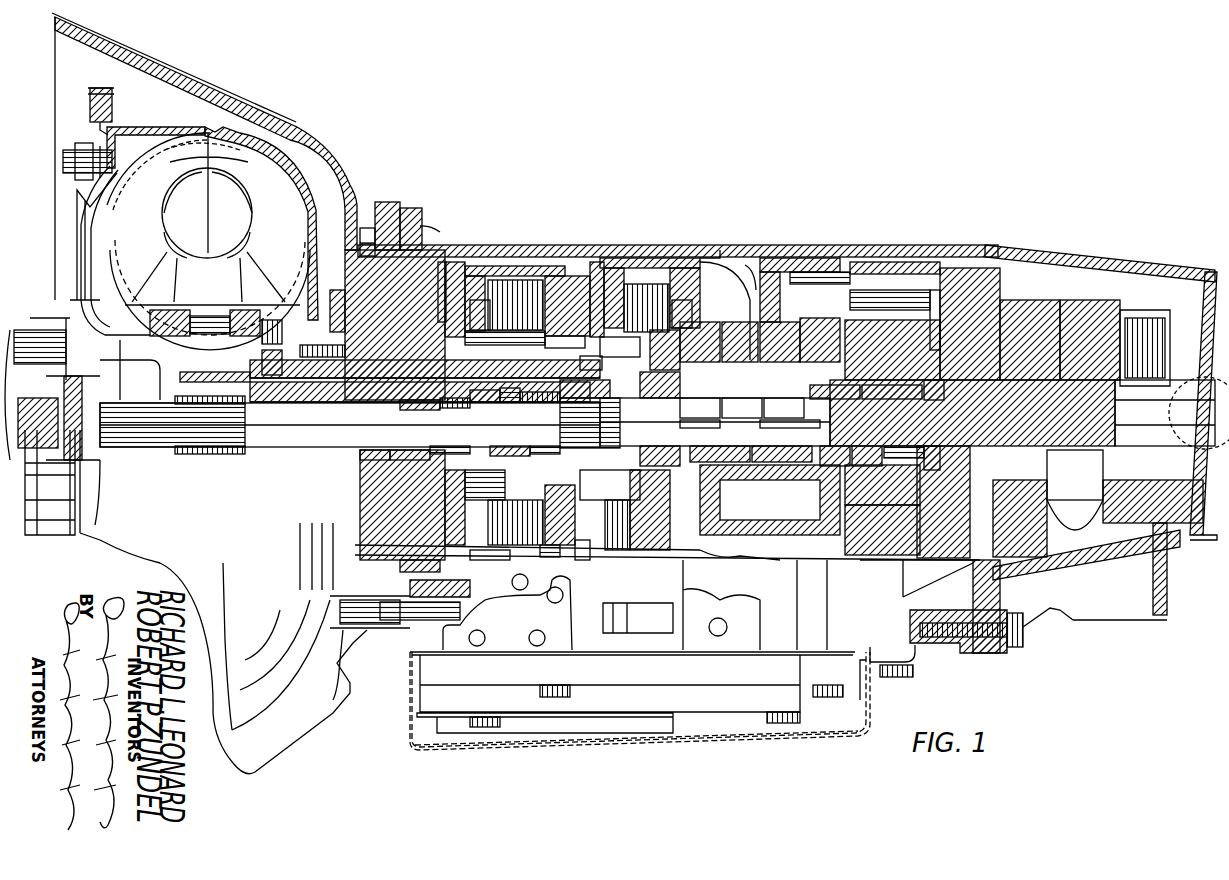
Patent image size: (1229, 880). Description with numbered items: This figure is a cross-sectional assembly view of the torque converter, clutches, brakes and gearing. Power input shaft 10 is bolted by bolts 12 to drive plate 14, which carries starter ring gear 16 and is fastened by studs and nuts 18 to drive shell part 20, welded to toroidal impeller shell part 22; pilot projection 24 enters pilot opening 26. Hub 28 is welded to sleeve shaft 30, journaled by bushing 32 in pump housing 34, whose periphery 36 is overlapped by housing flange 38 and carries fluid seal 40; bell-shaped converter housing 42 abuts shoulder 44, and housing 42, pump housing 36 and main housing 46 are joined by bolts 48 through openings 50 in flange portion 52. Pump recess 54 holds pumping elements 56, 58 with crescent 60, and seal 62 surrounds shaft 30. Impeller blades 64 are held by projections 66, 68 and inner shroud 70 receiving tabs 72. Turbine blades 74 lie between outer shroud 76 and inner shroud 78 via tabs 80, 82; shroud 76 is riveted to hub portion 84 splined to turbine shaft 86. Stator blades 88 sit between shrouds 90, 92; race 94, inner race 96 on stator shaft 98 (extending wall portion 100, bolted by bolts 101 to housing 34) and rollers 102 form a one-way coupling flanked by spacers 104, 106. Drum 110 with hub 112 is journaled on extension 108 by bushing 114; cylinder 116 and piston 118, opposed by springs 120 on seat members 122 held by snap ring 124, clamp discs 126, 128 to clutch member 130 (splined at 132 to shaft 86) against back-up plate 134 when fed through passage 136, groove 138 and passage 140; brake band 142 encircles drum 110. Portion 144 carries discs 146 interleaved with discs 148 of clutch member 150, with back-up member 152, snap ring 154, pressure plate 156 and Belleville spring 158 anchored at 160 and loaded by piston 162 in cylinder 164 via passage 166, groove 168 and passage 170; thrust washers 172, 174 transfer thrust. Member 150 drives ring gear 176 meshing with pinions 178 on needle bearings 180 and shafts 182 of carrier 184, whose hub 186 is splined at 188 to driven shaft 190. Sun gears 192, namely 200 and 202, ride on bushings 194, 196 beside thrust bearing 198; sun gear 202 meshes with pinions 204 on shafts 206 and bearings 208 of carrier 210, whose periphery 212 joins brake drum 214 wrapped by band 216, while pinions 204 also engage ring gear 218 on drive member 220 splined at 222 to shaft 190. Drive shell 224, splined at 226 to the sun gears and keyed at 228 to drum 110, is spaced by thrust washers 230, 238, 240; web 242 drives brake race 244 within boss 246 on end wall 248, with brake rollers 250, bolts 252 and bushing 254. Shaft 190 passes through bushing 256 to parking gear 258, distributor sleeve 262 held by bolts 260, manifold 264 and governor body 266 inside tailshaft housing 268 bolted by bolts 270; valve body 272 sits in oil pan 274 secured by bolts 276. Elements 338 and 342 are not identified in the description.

The power input shaft 10 is at (28, 334).
The bolts 12 is at (56, 328).
The drive plate 14 is at (78, 186).
The starter ring gear 16 is at (91, 99).
The studs and cooperating nuts 18 is at (86, 150).
The torque converter drive shell part 20 is at (130, 127).
The impeller shell part 22 is at (192, 127).
The pilot projection 24 is at (80, 420).
The pilot opening 26 is at (40, 420).
The hub 28 is at (264, 362).
The sleeve shaft 30 is at (312, 400).
The bushing 32 is at (335, 400).
The pump housing 34 is at (345, 324).
The pump housing periphery 36 is at (368, 238).
The housing flange 38 is at (383, 206).
The fluid seal 40 is at (410, 208).
The torque converter housing 42 is at (298, 130).
The shoulder 44 is at (368, 252).
The main housing 46 is at (468, 262).
The bolts 48 is at (342, 622).
The registering openings 50 is at (438, 621).
The peripheral flange portion 52 is at (436, 230).
The pump recess 54 is at (378, 458).
The pumping element 56 is at (402, 458).
The pumping element 58 is at (400, 512).
The crescent 60 is at (348, 298).
The fluid seal 62 is at (318, 352).
The impeller blades 64 is at (262, 219).
The projections 66 is at (246, 182).
The innermost projections 68 is at (305, 262).
The inner shroud 70 is at (245, 194).
The tabs 72 is at (240, 194).
The turbine blades 74 is at (146, 208).
The outer shroud 76 is at (140, 160).
The inner shroud 78 is at (170, 213).
The tabs 80 is at (178, 148).
The tabs 82 is at (170, 195).
The hub portion 84 is at (176, 386).
The turbine shaft 86 is at (204, 422).
The stator blades 88 is at (232, 298).
The first shroud 90 is at (205, 258).
The second shroud 92 is at (250, 322).
The coupling race 94 is at (212, 316).
The inner coupling race 96 is at (160, 406).
The stator shaft 98 is at (250, 402).
The wall portion 100 is at (449, 292).
The bolts 101 is at (428, 568).
The rollers 102 is at (216, 400).
The thrust member 104 is at (190, 320).
The thrust member 106 is at (266, 328).
The extension 108 is at (550, 446).
The drum 110 is at (530, 280).
The hub 112 is at (452, 406).
The bushing 114 is at (536, 402).
The annular cylinder 116 is at (474, 300).
The annular piston 118 is at (478, 290).
The clutch springs 120 is at (508, 336).
The spring seat members 122 is at (506, 506).
The snap ring 124 is at (500, 492).
The clutch discs 126 is at (514, 590).
The clutch discs 128 is at (488, 568).
The clutch member 130 is at (552, 338).
The splined connection 132 is at (608, 388).
The back-up plate 134 is at (560, 276).
The radial passage 136 is at (480, 402).
The annular groove 138 is at (462, 446).
The pressure distributor passage 140 is at (512, 446).
The friction brake band 142 is at (502, 266).
The rearwardly extending portion 144 is at (668, 272).
The clutch discs 146 is at (652, 555).
The clutch discs 148 is at (618, 555).
The clutch member 150 is at (660, 338).
The clutch pressure back-up member 152 is at (684, 296).
The snap ring 154 is at (688, 290).
The pressure plate 156 is at (640, 290).
The Belleville actuator spring 158 is at (596, 262).
The anchor 160 is at (612, 284).
The annular piston 162 is at (582, 556).
The annular cylinder 164 is at (548, 552).
The passage 166 is at (574, 360).
The annular groove 168 is at (546, 492).
The pressure supply passage 170 is at (592, 402).
The thrust washer 172 is at (592, 492).
The thrust washer 174 is at (414, 406).
The ring gear 176 is at (722, 286).
The planet pinions 178 is at (748, 278).
The needle bearings 180 is at (780, 342).
The pinion shafts 182 is at (734, 342).
The carrier 184 is at (699, 342).
The hub 186 is at (690, 426).
The splines 188 is at (650, 456).
The driven shaft 190 is at (920, 412).
The sun gears 192 is at (741, 408).
The bushing 194 is at (699, 408).
The bushing 196 is at (784, 408).
The thrust bearing 198 is at (678, 380).
The sun gear 200 is at (696, 456).
The sun gear 202 is at (790, 428).
The planet pinions 204 is at (780, 270).
The pinion shafts 206 is at (828, 396).
The needle bearings 208 is at (770, 500).
The planet carrier 210 is at (886, 350).
The outer periphery 212 is at (768, 272).
The brake drum 214 is at (808, 272).
The multiple wrap brake band 216 is at (850, 262).
The ring gear 218 is at (758, 560).
The drive member 220 is at (855, 516).
The splines 222 is at (855, 482).
The drive shell 224 is at (740, 258).
The inner periphery 226 is at (775, 458).
The key connection 228 is at (605, 258).
The thrust washer 230 is at (815, 340).
The thrust washer 238 is at (826, 458).
The thrust washer 240 is at (866, 458).
The web 242 is at (892, 396).
The brake race 244 is at (950, 388).
The annular shoulder 246 is at (940, 300).
The end wall 248 is at (964, 300).
The brake rollers 250 is at (952, 510).
The bolts 252 is at (985, 262).
The bushing 254 is at (855, 296).
The bushing 256 is at (934, 460).
The parking gear mechanism 258 is at (962, 540).
The bolts 260 is at (1005, 305).
The fluid pressure distributor sleeve 262 is at (1084, 328).
The pressure distributor manifold 264 is at (1036, 386).
The governor valve body 266 is at (1165, 330).
The tailshaft housing 268 is at (1100, 570).
The bolts 270 is at (1008, 645).
The valve body 272 is at (735, 692).
The oil pan 274 is at (805, 712).
The bolts 276 is at (905, 680).
The sleeve 338 is at (898, 458).
The snap ring 342 is at (508, 402).